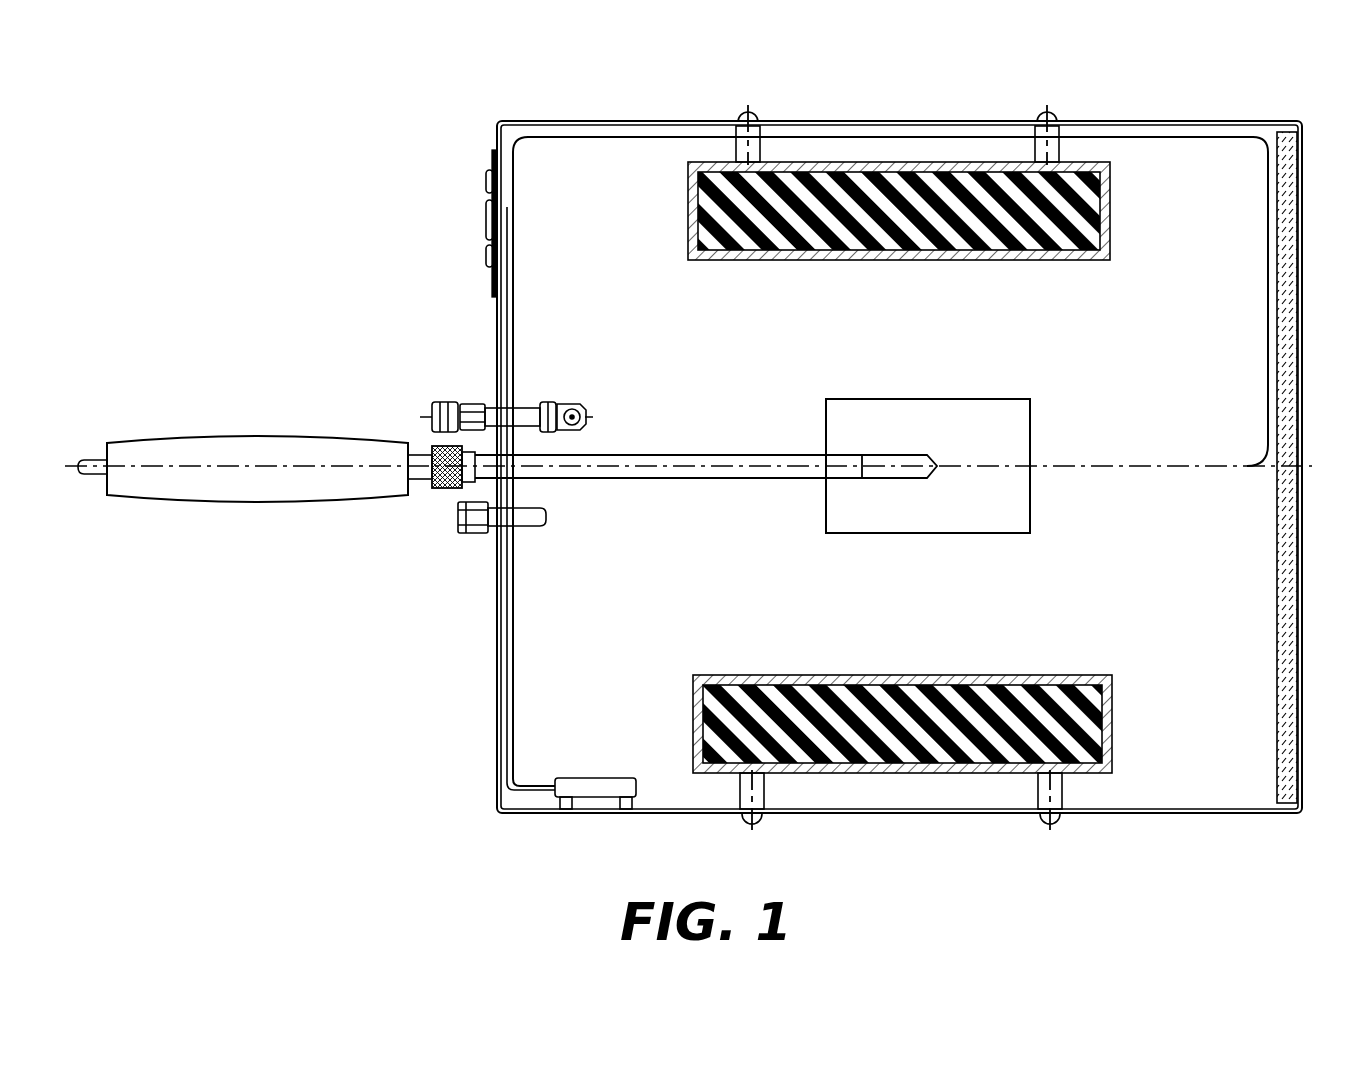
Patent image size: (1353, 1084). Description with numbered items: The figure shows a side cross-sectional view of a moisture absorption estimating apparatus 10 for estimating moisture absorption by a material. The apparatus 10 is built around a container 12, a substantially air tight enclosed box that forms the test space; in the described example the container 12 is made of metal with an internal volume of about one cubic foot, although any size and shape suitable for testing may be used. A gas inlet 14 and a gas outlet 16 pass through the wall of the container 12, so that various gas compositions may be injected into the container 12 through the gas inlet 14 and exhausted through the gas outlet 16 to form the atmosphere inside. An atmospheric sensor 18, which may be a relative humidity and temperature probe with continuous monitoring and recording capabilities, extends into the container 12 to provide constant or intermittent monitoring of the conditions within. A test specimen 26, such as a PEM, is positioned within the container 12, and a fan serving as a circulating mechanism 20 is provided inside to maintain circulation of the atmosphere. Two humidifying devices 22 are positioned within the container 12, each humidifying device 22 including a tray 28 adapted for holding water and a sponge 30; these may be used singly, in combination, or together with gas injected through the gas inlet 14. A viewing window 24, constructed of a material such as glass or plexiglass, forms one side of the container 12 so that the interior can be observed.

The moisture absorption estimating apparatus 10 is at (293, 313).
The container 12 is at (497, 788).
The gas inlet 14 is at (466, 400).
The gas outlet 16 is at (471, 534).
The atmospheric sensor 18 is at (346, 502).
The circulating mechanism 20 is at (580, 778).
The humidifying device 22 is at (1077, 646).
The viewing window 24 is at (1277, 688).
The test specimen 26 is at (1015, 425).
The tray 28 is at (688, 232).
The sponge 30 is at (860, 252).